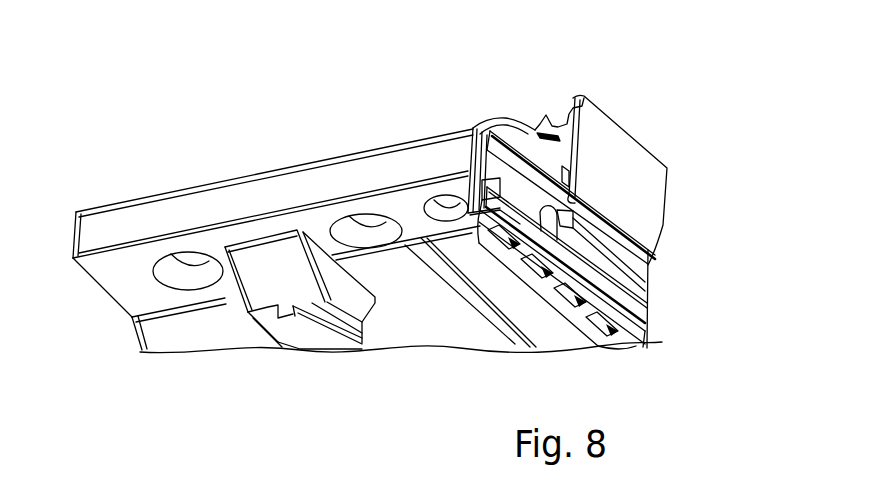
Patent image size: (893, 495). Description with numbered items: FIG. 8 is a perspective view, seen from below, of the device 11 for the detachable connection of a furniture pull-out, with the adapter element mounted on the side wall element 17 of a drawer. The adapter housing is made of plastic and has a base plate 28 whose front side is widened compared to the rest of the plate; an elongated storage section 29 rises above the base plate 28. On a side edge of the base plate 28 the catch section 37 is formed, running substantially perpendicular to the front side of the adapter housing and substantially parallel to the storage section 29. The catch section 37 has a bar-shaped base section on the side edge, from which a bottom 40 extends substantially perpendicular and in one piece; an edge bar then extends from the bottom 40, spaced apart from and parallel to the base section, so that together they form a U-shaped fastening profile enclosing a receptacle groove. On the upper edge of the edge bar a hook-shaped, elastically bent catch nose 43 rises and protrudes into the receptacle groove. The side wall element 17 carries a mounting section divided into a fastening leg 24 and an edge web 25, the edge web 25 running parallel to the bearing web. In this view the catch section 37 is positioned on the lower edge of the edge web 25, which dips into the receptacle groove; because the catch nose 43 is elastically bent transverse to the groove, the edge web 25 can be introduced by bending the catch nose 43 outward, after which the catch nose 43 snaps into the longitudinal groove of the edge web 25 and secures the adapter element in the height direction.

The device 11 is at (502, 88).
The side wall element 17 is at (629, 128).
The fastening leg 24 is at (518, 115).
The edge web 25 is at (476, 128).
The base plate 28 is at (128, 221).
The storage section 29 is at (325, 362).
The catch section 37 is at (630, 287).
The bottom 40 is at (478, 213).
The catch nose 43 is at (574, 218).